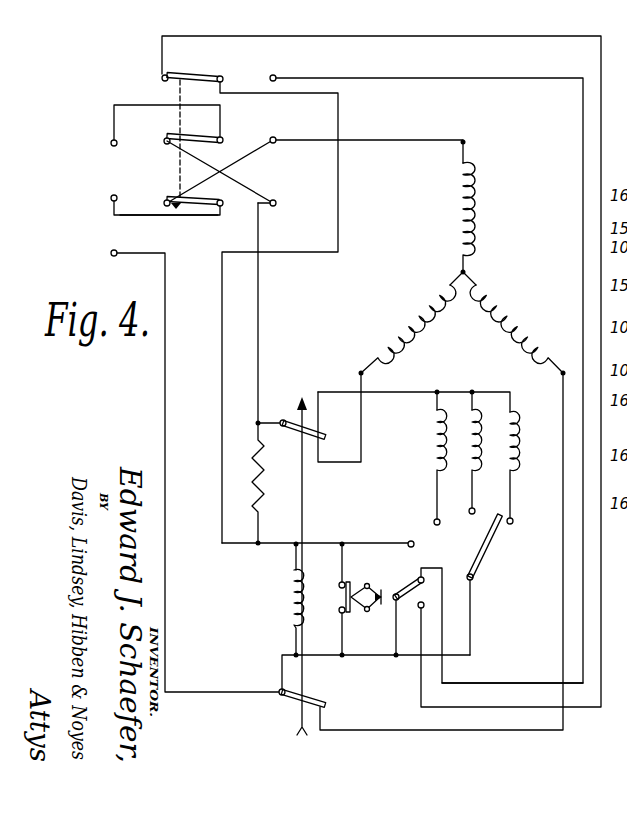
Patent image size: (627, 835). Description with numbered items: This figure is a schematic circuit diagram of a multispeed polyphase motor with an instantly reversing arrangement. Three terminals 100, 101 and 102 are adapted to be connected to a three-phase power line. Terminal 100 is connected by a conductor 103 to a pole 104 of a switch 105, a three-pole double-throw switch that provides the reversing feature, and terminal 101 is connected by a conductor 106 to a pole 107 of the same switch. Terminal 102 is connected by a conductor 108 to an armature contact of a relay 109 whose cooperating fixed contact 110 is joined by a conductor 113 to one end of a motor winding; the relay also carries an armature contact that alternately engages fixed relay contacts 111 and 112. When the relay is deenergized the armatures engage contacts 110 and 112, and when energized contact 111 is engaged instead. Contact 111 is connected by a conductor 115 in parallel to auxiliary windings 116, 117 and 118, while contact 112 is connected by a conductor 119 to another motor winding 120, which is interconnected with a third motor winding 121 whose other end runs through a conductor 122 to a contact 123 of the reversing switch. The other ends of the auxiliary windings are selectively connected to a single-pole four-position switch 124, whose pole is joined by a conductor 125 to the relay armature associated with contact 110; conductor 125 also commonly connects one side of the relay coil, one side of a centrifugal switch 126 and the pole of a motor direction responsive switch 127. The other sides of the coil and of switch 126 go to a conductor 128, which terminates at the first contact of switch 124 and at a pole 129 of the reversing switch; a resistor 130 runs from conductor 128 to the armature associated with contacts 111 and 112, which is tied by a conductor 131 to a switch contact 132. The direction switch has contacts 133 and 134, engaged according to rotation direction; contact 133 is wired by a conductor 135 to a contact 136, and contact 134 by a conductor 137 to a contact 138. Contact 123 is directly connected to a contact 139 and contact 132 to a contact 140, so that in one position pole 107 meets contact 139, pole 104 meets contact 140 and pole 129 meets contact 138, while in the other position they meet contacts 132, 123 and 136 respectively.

The terminal 100 is at (110, 148).
The terminal 101 is at (110, 201).
The terminal 102 is at (110, 255).
The conductor 103 is at (138, 104).
The pole 104 is at (198, 136).
The switch 105 is at (176, 164).
The conductor 106 is at (150, 216).
The pole 107 is at (203, 196).
The conductor 108 is at (166, 355).
The relay 109 is at (286, 601).
The fixed relay contact 110 is at (324, 714).
The fixed relay contact 111 is at (323, 407).
The fixed relay contact 112 is at (320, 446).
The conductor 113 is at (432, 731).
The conductor 115 is at (400, 396).
The auxiliary winding 116 is at (430, 453).
The auxiliary winding 117 is at (465, 453).
The auxiliary winding 118 is at (504, 453).
The conductor 119 is at (518, 311).
The motor winding 120 is at (420, 297).
The motor winding 121 is at (458, 213).
The conductor 122 is at (390, 140).
The contact 123 is at (276, 144).
The switch 124 is at (494, 561).
The conductor 125 is at (376, 657).
The centrifugal switch 126 is at (355, 616).
The motor direction responsive switch 127 is at (410, 610).
The conductor 128 is at (236, 547).
The pole 129 is at (196, 73).
The resistor 130 is at (262, 473).
The conductor 131 is at (258, 337).
The switch contact 132 is at (278, 205).
The contact 133 is at (418, 580).
The contact 134 is at (424, 605).
The conductor 135 is at (516, 683).
The contact 136 is at (275, 75).
The conductor 137 is at (586, 709).
The contact 138 is at (162, 75).
The contact 139 is at (164, 204).
The contact 140 is at (165, 139).